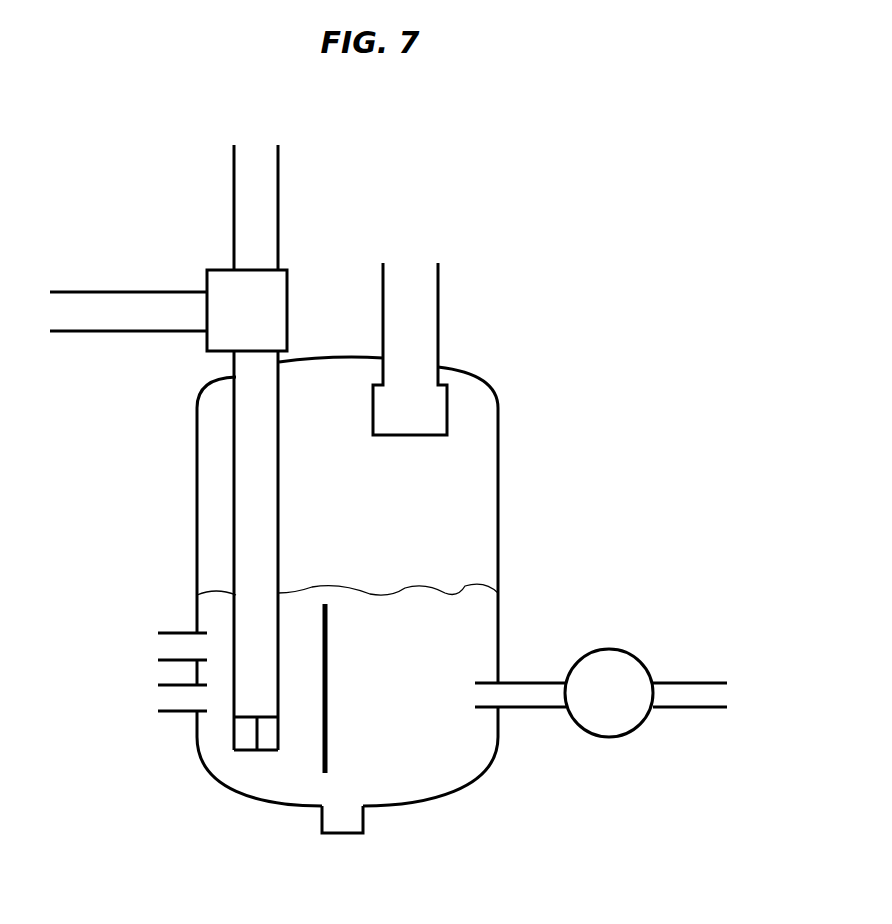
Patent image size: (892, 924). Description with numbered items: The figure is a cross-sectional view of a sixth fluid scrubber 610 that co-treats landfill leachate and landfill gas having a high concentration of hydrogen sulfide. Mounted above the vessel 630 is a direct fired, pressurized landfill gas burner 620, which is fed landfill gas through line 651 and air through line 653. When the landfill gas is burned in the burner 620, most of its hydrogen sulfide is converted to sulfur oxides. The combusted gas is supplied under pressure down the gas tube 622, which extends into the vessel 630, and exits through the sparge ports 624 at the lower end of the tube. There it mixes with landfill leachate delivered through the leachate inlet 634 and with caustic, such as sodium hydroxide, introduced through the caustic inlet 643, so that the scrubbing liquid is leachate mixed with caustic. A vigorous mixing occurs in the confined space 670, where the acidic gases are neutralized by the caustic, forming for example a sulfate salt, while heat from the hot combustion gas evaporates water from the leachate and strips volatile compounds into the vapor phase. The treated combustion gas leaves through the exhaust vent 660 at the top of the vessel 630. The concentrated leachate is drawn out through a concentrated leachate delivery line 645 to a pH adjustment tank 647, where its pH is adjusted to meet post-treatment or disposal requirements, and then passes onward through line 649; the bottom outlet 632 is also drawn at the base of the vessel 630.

The fluid scrubber 610 is at (177, 563).
The direct fired landfill gas burner 620 is at (218, 334).
The gas tube 622 is at (250, 473).
The sparge ports 624 is at (237, 737).
The vessel 630 is at (500, 428).
The bottom outlet 632 is at (347, 827).
The leachate inlet 634 is at (157, 649).
The caustic inlet 643 is at (157, 700).
The concentrated leachate delivery line 645 is at (523, 693).
The pH adjustment tank 647 is at (606, 660).
The discharge pipe 649 is at (693, 692).
The landfill gas line 651 is at (100, 333).
The air line 653 is at (247, 205).
The exhaust vent 660 is at (415, 335).
The confined space 670 is at (308, 757).